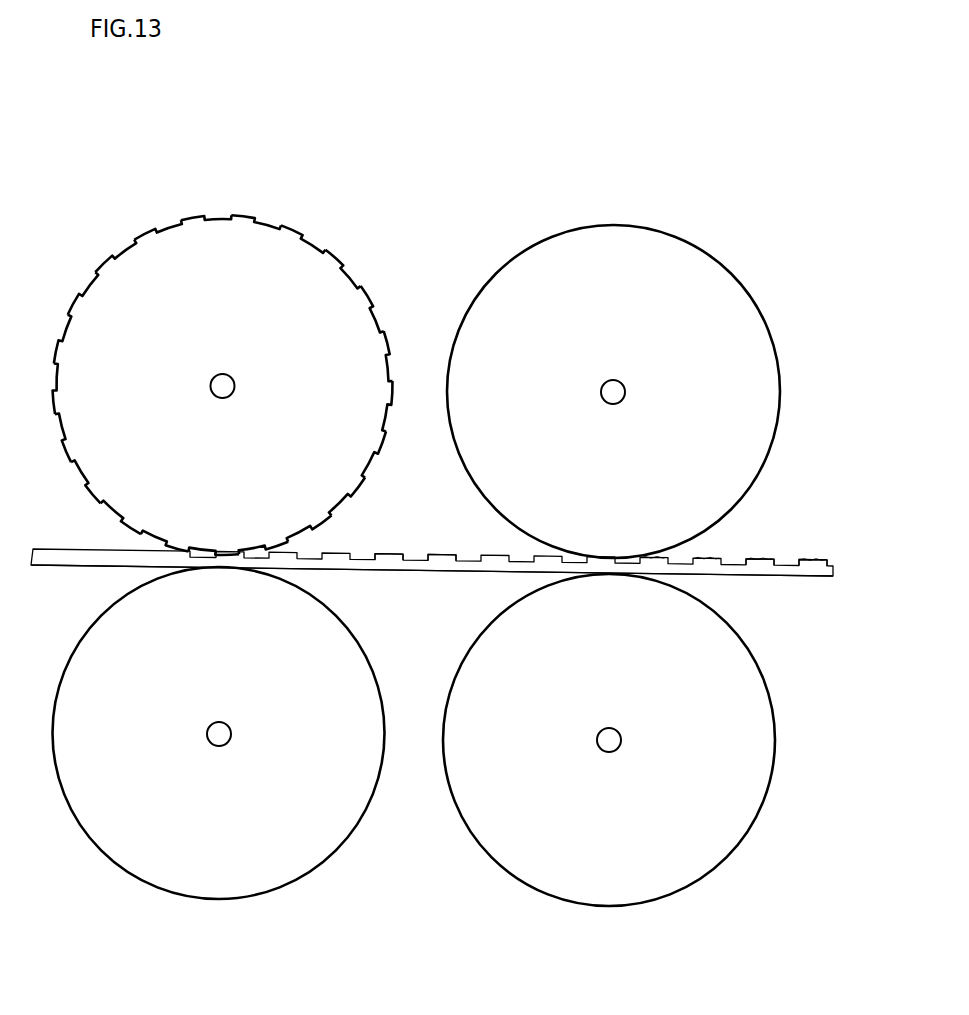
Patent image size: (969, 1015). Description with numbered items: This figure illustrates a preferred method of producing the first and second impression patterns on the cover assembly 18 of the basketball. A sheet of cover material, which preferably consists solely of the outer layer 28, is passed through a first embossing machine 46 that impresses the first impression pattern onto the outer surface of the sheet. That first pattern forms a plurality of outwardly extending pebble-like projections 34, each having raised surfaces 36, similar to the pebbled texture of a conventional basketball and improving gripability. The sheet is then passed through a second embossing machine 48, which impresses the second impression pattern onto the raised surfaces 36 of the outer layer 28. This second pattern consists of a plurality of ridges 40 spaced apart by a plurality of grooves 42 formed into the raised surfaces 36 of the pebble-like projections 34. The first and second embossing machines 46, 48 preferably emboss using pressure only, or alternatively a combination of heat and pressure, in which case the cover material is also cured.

The cover assembly 18 is at (63, 528).
The outer layer 28 is at (107, 558).
The pebble-like projections 34 is at (447, 553).
The raised surfaces 36 is at (383, 552).
The ridges 40 is at (767, 558).
The grooves 42 is at (820, 560).
The first embossing machine 46 is at (98, 200).
The second embossing machine 48 is at (772, 255).